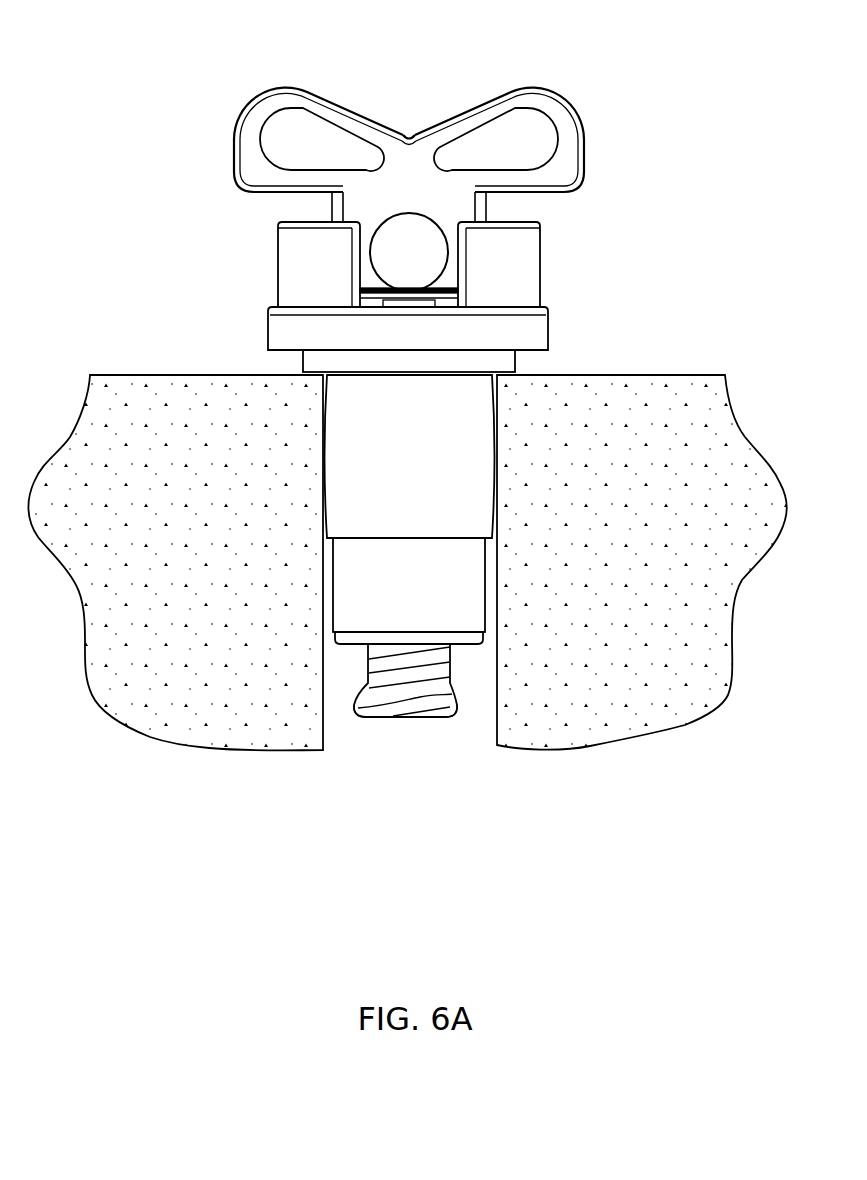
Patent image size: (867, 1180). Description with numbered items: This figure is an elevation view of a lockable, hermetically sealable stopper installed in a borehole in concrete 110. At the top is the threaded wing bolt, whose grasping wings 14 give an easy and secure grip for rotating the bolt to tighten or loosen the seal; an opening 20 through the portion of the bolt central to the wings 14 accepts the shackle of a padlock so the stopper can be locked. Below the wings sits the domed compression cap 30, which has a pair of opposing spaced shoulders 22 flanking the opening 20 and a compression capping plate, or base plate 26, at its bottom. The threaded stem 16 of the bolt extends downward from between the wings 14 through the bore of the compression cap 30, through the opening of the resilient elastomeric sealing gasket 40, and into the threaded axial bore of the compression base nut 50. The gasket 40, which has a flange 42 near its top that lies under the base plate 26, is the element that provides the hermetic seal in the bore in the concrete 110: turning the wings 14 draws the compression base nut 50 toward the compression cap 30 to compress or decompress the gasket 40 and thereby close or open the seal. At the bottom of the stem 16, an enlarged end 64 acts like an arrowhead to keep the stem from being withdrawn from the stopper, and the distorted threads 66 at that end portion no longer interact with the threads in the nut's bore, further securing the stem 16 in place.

The wings 14 is at (560, 93).
The opening 20 is at (408, 243).
The shoulder 22 is at (510, 258).
The base plate 26 is at (542, 333).
The domed compression cap 30 is at (395, 191).
The flange 42 is at (337, 349).
The sealing gasket 40 is at (400, 457).
The compression base nut 50 is at (400, 598).
The stem section 16 is at (404, 719).
The enlarged end 64 is at (398, 718).
The distorted threads 66 is at (433, 703).
The concrete 110 is at (226, 556).